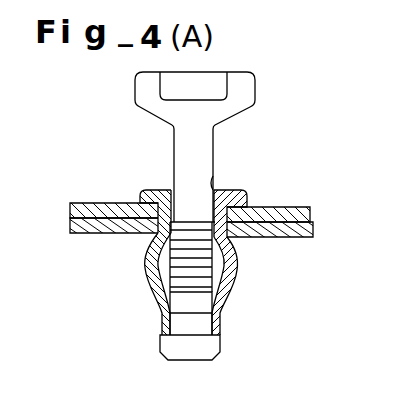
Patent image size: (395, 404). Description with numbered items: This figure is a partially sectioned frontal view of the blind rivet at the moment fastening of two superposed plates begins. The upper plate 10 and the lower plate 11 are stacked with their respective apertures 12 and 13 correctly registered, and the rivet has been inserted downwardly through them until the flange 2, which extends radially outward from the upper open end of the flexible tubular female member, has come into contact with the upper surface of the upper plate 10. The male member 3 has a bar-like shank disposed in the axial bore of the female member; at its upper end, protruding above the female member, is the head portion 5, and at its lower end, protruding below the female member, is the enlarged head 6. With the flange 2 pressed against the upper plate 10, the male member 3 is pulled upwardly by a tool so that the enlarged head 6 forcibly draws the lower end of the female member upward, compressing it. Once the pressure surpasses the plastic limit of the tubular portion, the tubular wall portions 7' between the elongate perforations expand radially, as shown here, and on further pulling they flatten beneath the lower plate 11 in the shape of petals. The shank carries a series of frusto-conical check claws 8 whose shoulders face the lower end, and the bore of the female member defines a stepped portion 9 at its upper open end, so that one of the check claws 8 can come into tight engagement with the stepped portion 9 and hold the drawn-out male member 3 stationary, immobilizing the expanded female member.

The flange 2 is at (232, 200).
The male member 3 is at (183, 157).
The head portion 5 is at (242, 97).
The enlarged head 6 is at (205, 347).
The tubular wall portion 7' is at (175, 284).
The check claws 8 is at (195, 275).
The stepped portion 9 is at (212, 184).
The upper plate 10 is at (300, 209).
The lower plate 11 is at (303, 237).
The aperture 12 is at (138, 203).
The aperture 13 is at (140, 233).